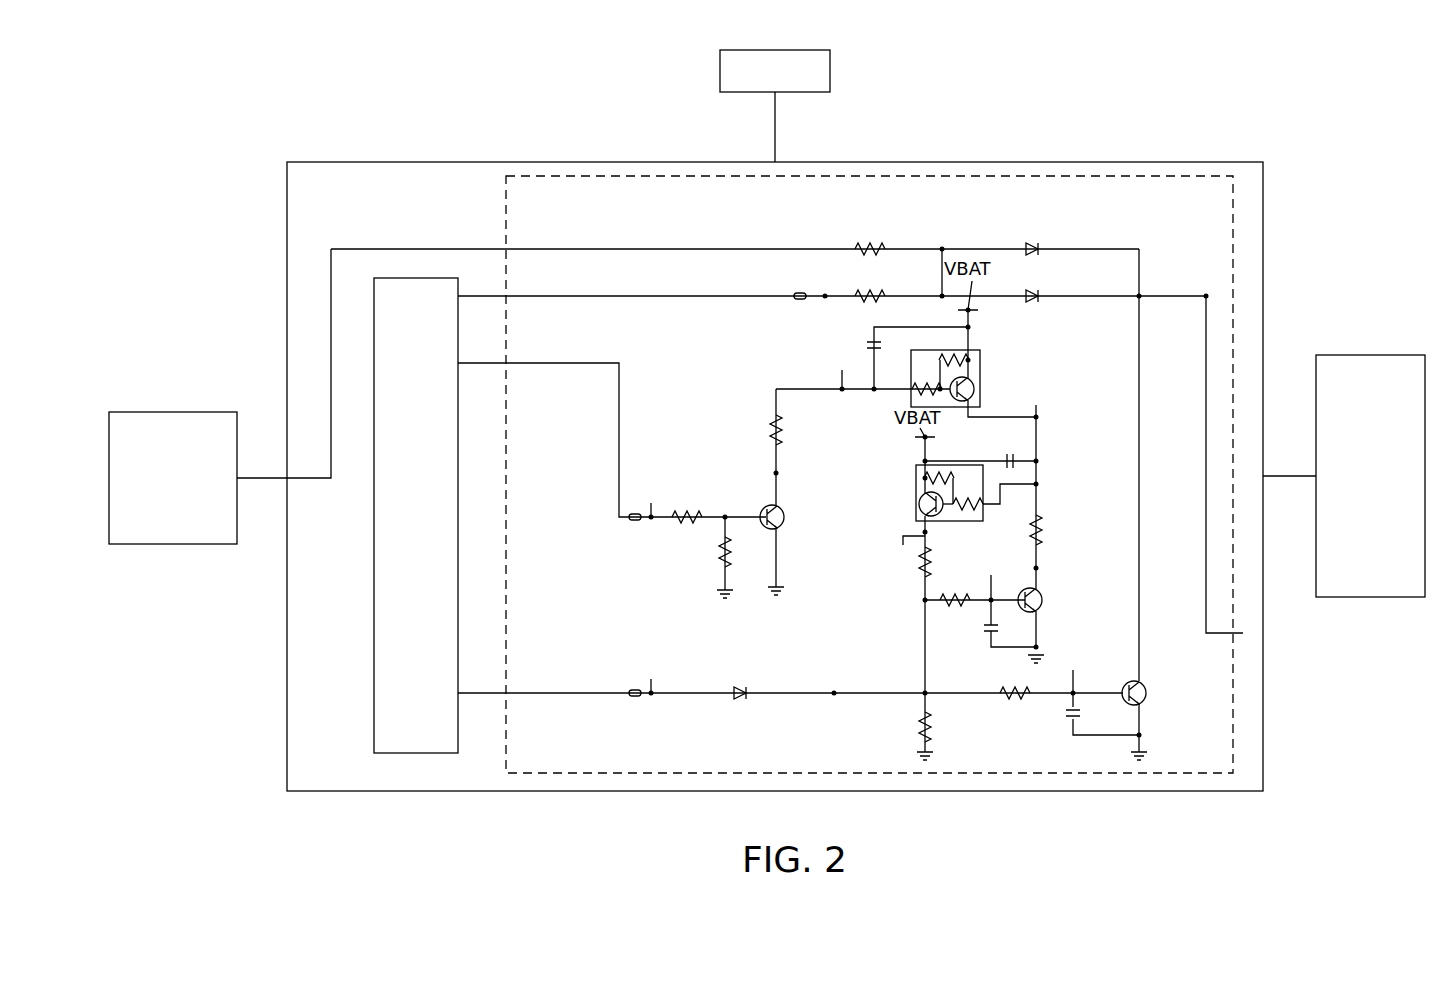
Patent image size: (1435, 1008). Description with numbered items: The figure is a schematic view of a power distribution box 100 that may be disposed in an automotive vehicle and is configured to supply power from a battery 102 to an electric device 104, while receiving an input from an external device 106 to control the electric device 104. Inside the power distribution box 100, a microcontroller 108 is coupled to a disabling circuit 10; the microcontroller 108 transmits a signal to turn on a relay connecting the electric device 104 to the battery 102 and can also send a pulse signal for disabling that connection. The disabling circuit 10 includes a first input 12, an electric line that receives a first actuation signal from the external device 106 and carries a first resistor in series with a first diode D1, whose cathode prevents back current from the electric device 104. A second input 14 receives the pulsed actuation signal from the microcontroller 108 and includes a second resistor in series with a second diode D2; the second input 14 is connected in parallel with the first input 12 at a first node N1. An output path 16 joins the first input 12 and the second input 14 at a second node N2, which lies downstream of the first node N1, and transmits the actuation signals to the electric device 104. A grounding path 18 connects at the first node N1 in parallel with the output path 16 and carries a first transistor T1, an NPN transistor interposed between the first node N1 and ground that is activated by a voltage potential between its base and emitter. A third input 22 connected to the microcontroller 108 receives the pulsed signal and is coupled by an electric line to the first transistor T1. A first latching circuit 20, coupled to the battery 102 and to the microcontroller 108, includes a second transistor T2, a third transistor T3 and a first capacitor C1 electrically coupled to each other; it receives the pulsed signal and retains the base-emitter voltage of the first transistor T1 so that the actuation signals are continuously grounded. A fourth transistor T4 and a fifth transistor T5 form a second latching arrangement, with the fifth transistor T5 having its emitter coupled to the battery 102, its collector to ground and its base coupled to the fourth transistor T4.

The power distribution box 100 is at (1030, 150).
The disabling circuit 10 is at (938, 185).
The battery 102 is at (718, 56).
The electric device 104 is at (1372, 355).
The external device 106 is at (172, 412).
The microcontroller 108 is at (393, 640).
The first input 12 is at (535, 249).
The second input 14 is at (518, 298).
The output path 16 is at (1206, 433).
The grounding path 18 is at (1139, 433).
The first latching circuit 20 is at (959, 579).
The third input 22 is at (518, 693).
The first node N1 is at (1142, 296).
The second node N2 is at (1203, 299).
The first diode D1 is at (1034, 235).
The second diode D2 is at (1033, 313).
The first transistor T1 is at (1152, 700).
The second transistor T2 is at (1052, 600).
The third transistor T3 is at (908, 497).
The fourth transistor T4 is at (793, 517).
The fifth transistor T5 is at (995, 385).
The first capacitor C1 is at (1002, 630).